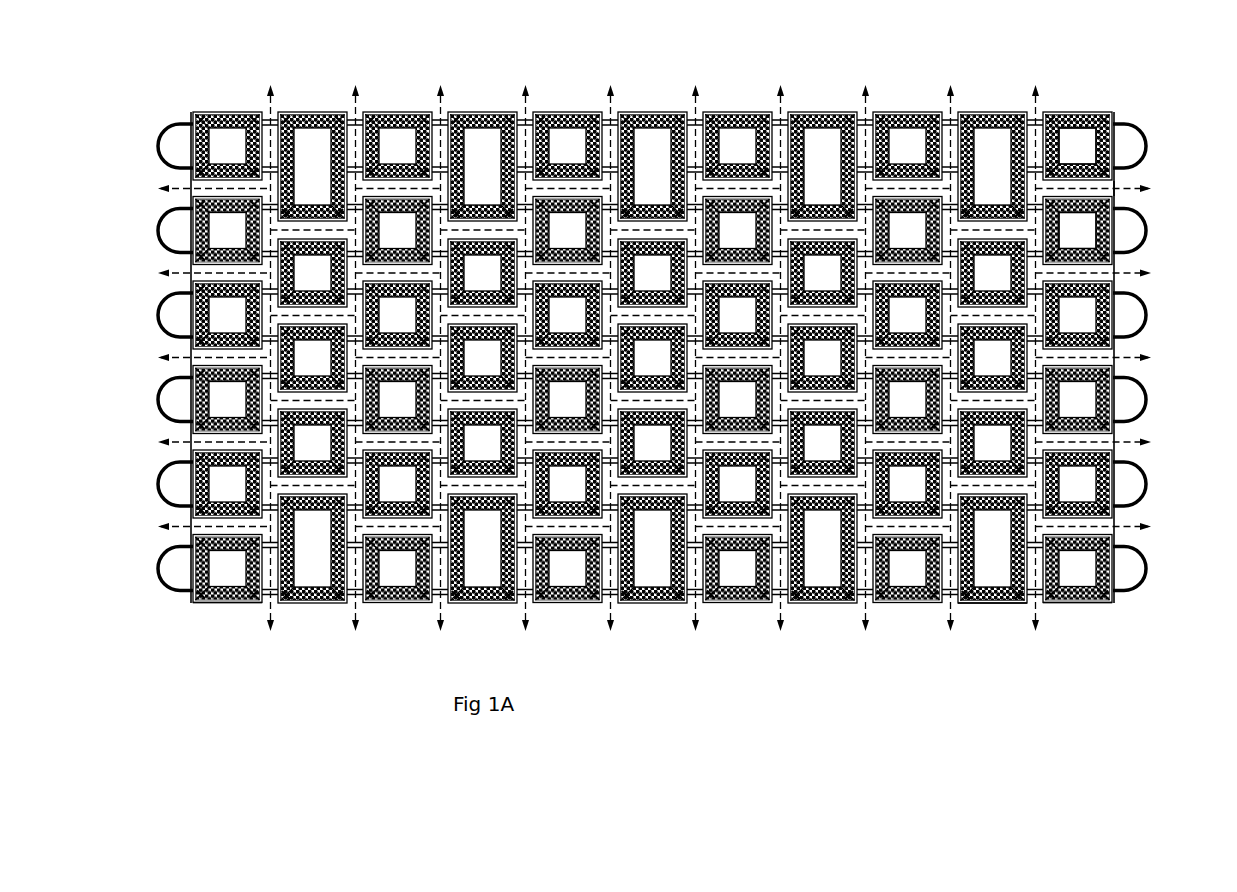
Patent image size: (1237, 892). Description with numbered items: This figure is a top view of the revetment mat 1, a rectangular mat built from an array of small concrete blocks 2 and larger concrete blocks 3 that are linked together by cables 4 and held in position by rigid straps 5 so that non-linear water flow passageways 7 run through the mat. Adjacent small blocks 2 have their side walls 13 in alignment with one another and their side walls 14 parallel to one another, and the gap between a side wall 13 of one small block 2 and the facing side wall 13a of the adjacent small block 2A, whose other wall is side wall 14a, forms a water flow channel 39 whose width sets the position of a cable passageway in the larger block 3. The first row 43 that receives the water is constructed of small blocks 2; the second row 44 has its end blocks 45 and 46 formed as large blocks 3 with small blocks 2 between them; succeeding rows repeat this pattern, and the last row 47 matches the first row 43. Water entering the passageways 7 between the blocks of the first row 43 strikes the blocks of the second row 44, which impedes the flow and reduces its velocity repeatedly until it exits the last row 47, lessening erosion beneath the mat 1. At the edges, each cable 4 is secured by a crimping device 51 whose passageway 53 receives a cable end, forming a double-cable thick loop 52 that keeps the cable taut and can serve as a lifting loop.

The revetment mat 1 is at (646, 56).
The small concrete block 2 is at (393, 98).
The larger concrete block 3 is at (476, 103).
The cable 4 is at (165, 113).
The rigid strap 5 is at (165, 183).
The water flow passageway 7 is at (946, 130).
The side wall of small block 13 is at (1106, 107).
The side wall of small block 13a is at (1107, 218).
The side wall of small block 14 is at (1050, 178).
The side wall of small block 14a is at (1050, 262).
The small concrete block 2A is at (1118, 190).
The water flow channel 39 is at (690, 95).
The first row 43 is at (1058, 615).
The second row 44 is at (982, 615).
The end block 45 is at (960, 598).
The end block 46 is at (983, 103).
The last row 47 is at (234, 618).
The crimping device 51 is at (185, 106).
The double-cable thick loop 52 is at (1132, 135).
The passageway of crimping device 53 is at (150, 133).